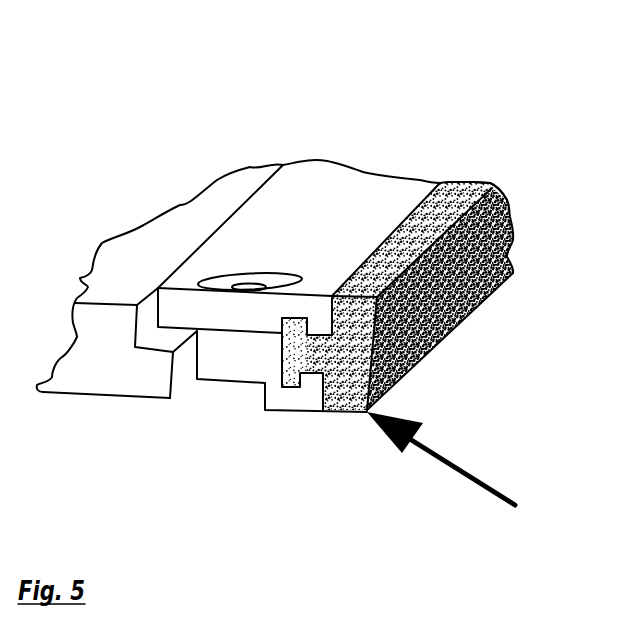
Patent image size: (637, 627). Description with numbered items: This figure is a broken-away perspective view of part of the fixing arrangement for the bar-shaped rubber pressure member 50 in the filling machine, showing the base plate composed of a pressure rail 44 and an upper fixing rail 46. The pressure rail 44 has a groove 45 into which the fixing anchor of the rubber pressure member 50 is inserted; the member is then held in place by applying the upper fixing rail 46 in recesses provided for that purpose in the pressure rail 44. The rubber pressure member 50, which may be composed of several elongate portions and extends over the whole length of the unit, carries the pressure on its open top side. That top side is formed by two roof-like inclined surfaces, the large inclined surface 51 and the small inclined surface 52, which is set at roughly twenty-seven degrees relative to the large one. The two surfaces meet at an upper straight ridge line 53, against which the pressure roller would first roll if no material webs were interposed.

The pressure rail 44 is at (118, 377).
The groove 45 is at (292, 417).
The upper fixing rail 46 is at (318, 238).
The rubber pressure member 50 is at (468, 475).
The large inclined surface 51 is at (478, 240).
The small inclined surface 52 is at (495, 187).
The upper straight ridge line 53 is at (445, 313).